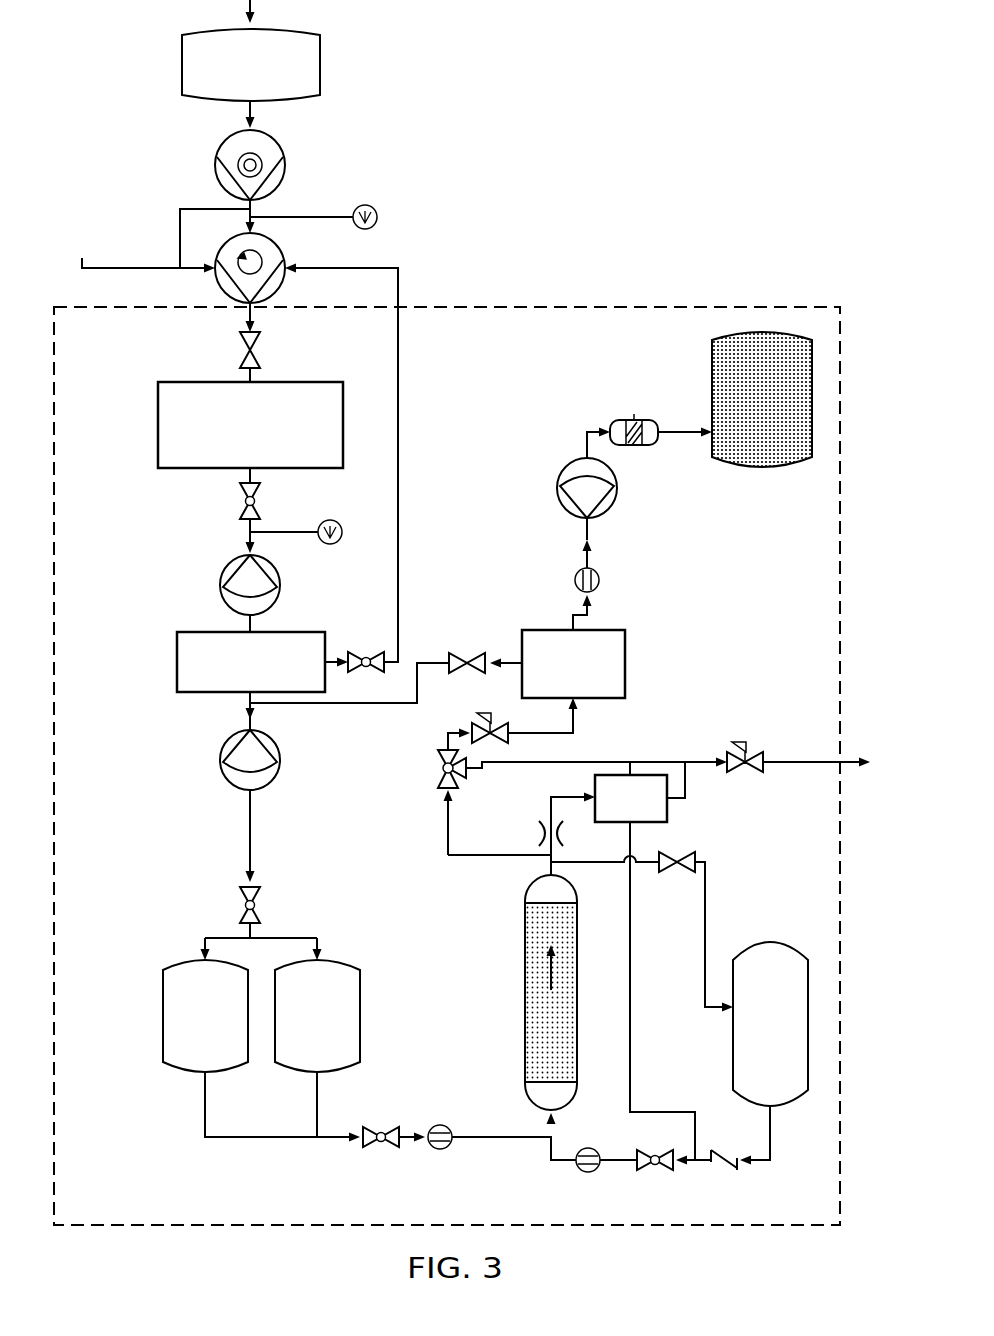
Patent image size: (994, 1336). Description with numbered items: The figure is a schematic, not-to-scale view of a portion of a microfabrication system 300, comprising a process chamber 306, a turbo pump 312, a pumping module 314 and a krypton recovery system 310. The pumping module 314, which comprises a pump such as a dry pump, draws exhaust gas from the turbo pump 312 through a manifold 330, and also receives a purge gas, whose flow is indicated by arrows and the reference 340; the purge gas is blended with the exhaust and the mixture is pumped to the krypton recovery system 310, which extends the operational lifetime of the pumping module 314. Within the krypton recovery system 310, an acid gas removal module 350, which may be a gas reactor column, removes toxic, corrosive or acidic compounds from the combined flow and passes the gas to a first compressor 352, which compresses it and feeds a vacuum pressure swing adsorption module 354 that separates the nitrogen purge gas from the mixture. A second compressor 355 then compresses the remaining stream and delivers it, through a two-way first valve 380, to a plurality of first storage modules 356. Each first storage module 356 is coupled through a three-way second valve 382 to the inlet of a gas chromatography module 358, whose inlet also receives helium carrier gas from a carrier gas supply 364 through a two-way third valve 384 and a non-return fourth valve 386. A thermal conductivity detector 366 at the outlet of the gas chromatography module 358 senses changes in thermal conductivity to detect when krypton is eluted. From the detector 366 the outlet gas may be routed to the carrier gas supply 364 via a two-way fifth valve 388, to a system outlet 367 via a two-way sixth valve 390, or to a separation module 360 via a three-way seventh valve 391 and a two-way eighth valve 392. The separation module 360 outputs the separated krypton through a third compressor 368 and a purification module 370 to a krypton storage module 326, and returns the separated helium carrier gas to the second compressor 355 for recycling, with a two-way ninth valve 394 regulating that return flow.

The microfabrication system 300 is at (605, 110).
The process chamber 306 is at (320, 64).
The krypton recovery system 310 is at (698, 306).
The turbo pump 312 is at (216, 147).
The pumping module 314 is at (285, 258).
The krypton storage module 326 is at (762, 468).
The manifold 330 is at (253, 212).
The purge gas flow 340 is at (130, 268).
The acid gas removal module 350 is at (158, 412).
The first compressor 352 is at (228, 569).
The vacuum pressure swing adsorption module 354 is at (176, 659).
The second compressor 355 is at (227, 781).
The first storage modules 356 is at (163, 992).
The gas chromatography module 358 is at (523, 980).
The separation module 360 is at (627, 646).
The carrier gas supply 364 is at (785, 944).
The thermal conductivity detector 366 is at (668, 812).
The system outlet 367 is at (850, 758).
The third compressor 368 is at (560, 470).
The purification module 370 is at (656, 447).
The first valve 380 is at (258, 893).
The second valve 382 is at (360, 1146).
The third valve 384 is at (668, 1170).
The fourth valve 386 is at (731, 1168).
The fifth valve 388 is at (677, 871).
The sixth valve 390 is at (752, 752).
The seventh valve 391 is at (440, 784).
The eighth valve 392 is at (510, 740).
The ninth valve 394 is at (478, 660).